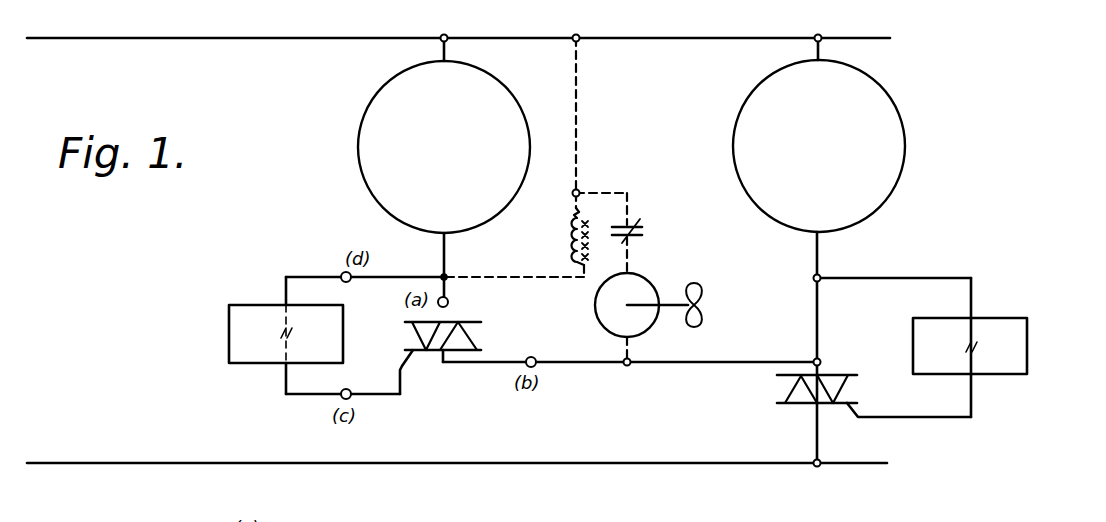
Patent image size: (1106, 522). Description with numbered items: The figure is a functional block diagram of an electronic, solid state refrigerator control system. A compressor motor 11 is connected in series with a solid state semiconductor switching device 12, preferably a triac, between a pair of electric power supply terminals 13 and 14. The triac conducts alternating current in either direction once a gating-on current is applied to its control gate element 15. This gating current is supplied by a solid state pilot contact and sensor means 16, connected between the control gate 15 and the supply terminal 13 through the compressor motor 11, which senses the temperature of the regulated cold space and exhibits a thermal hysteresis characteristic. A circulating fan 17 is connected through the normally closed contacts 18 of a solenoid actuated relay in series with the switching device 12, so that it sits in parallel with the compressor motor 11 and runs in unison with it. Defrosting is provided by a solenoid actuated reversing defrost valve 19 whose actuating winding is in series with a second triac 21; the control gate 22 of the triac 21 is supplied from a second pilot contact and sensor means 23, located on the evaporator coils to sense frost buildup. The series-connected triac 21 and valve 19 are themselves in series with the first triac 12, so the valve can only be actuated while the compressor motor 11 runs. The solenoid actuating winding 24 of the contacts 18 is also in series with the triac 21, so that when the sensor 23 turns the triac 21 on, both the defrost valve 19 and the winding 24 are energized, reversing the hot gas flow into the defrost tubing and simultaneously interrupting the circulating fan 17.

The compressor motor 11 is at (879, 93).
The solid state semiconductor switching device 12 is at (798, 404).
The electric power supply terminal 13 is at (786, 28).
The electric power supply terminal 14 is at (182, 462).
The control gate element 15 is at (851, 420).
The solid state pilot contact and sensor means 16 is at (1027, 357).
The circulating fan 17 is at (647, 290).
The normally closed contacts 18 is at (652, 211).
The solenoid actuated reversing defrost valve 19 is at (484, 74).
The second solid state gate controlled semiconductor switching device 21 is at (478, 322).
The control gate 22 is at (403, 358).
The second solid state pilot contact and sensor means 23 is at (246, 311).
The solenoid actuating winding 24 is at (562, 216).